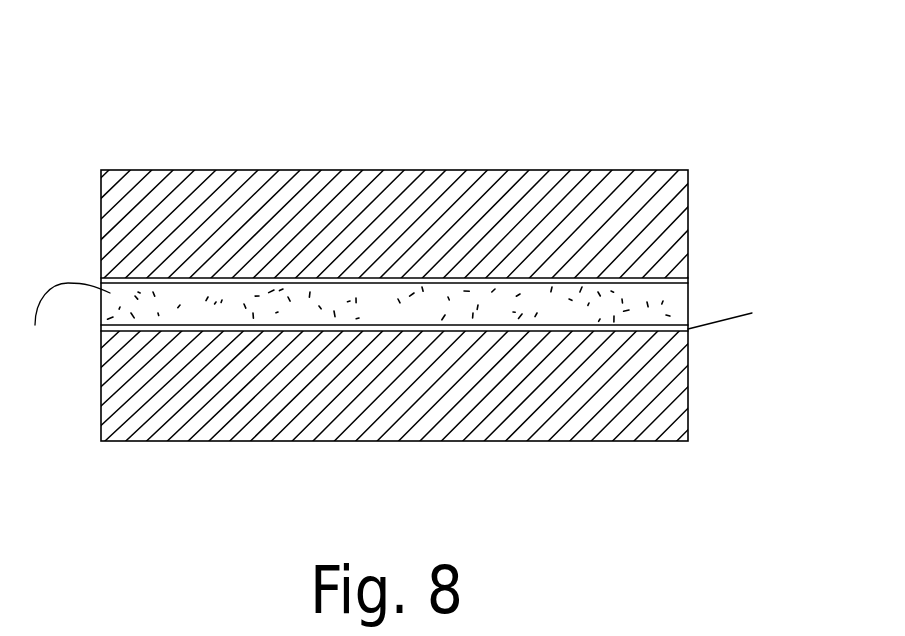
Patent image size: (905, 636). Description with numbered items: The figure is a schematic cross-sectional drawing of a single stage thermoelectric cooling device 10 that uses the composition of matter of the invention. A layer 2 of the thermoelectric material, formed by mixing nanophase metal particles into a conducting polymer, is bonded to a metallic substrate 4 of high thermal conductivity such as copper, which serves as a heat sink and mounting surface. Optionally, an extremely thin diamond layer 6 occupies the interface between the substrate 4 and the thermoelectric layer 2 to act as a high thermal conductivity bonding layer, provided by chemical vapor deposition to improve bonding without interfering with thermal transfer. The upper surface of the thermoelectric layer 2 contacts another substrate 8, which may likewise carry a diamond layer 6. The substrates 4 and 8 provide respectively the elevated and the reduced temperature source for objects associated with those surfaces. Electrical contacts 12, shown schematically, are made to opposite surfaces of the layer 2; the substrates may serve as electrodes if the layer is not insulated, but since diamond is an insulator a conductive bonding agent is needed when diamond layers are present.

The thermoelectric cooling device 10 is at (541, 128).
The substrate 8 is at (670, 212).
The diamond layer 6 is at (663, 278).
The thermoelectric layer 2 is at (667, 302).
The metallic substrate 4 is at (663, 392).
The electrical contacts 12 is at (43, 301).